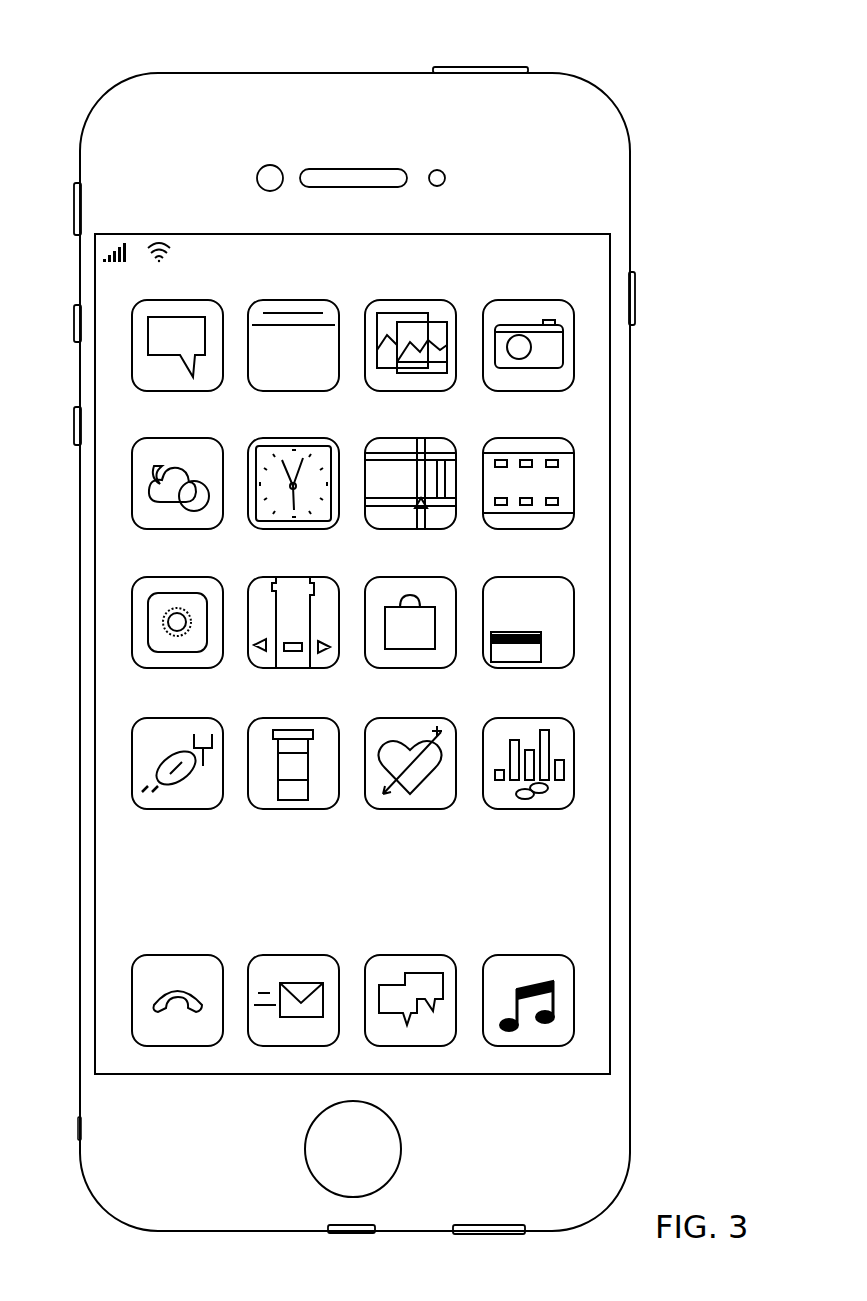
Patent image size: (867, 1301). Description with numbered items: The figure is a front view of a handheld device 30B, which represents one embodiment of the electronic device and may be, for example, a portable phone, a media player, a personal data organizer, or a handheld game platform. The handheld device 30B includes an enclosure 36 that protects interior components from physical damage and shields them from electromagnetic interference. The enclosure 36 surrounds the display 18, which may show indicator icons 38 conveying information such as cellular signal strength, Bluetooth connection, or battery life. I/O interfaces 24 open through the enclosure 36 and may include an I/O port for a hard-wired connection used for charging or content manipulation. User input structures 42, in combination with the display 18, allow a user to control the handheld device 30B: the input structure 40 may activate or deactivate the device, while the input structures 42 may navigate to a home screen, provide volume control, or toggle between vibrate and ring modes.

The handheld device 30B is at (143, 37).
The enclosure 36 is at (630, 202).
The input structure 40 is at (484, 70).
The user input structures 42 is at (73, 220).
The I/O interfaces 24 is at (355, 1236).
The display 18 is at (612, 600).
The status indicator icons 38 is at (163, 236).